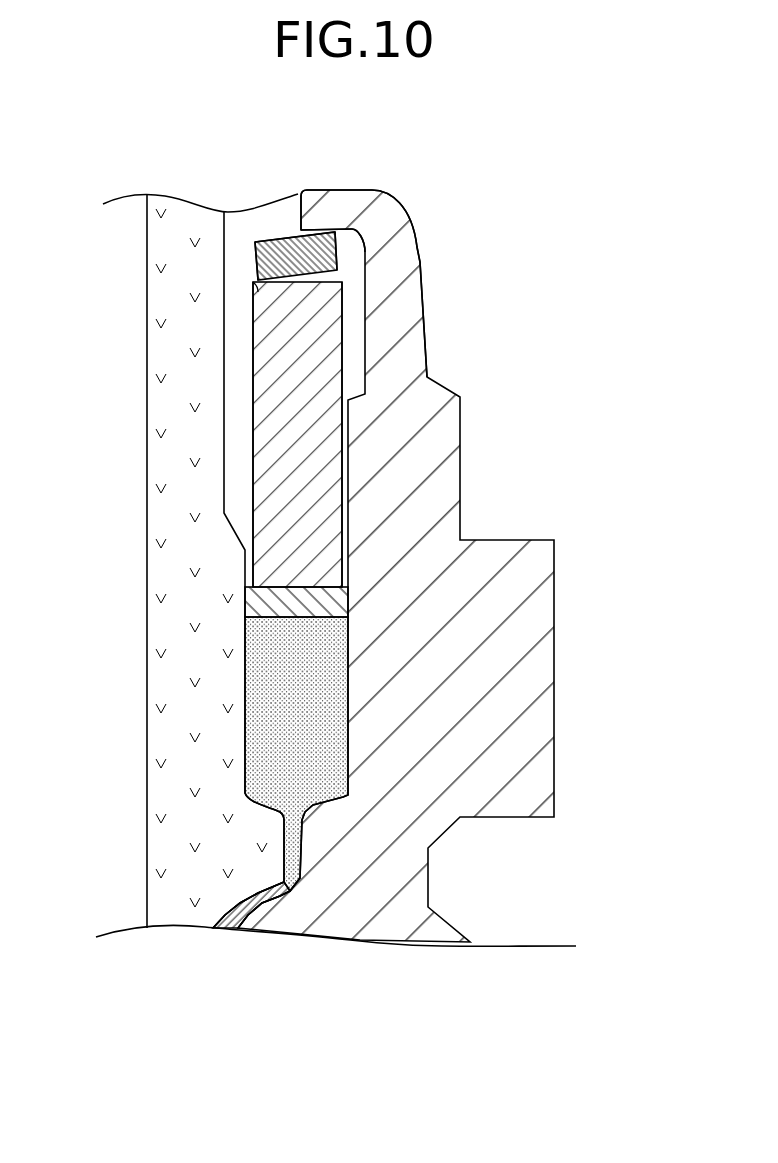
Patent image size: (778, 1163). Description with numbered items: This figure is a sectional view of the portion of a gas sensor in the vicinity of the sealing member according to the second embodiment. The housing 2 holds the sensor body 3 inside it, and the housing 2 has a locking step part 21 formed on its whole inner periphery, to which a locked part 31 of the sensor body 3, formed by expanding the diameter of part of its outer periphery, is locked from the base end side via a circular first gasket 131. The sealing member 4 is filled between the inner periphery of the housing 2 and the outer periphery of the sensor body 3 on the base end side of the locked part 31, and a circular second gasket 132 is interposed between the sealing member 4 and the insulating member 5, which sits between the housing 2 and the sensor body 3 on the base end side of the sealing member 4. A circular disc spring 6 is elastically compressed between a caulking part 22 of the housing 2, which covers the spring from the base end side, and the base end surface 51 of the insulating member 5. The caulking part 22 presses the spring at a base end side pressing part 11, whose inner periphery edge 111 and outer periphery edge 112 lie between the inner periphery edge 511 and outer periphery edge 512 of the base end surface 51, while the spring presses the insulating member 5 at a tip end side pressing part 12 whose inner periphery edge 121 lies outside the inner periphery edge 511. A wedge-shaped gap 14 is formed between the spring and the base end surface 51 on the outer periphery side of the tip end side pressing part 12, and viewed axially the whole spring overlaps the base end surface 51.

The housing 2 is at (467, 643).
The sensor body 3 is at (190, 458).
The sealing member 4 is at (268, 706).
The insulating member 5 is at (310, 468).
The circular disc spring 6 is at (282, 240).
The base end side pressing part 11 is at (328, 226).
The tip end side pressing part 12 is at (255, 314).
The wedge-shaped gap 14 is at (342, 281).
The locking step part 21 is at (277, 914).
The caulking part 22 is at (337, 209).
The locked part 31 is at (252, 881).
The base end surface 51 is at (337, 270).
The inner periphery edge 111 is at (328, 196).
The outer periphery edge 112 is at (352, 227).
The inner periphery edge 121 is at (258, 289).
The first gasket 131 is at (259, 915).
The second gasket 132 is at (245, 604).
The inner periphery edge 511 is at (257, 282).
The outer periphery edge 512 is at (342, 292).